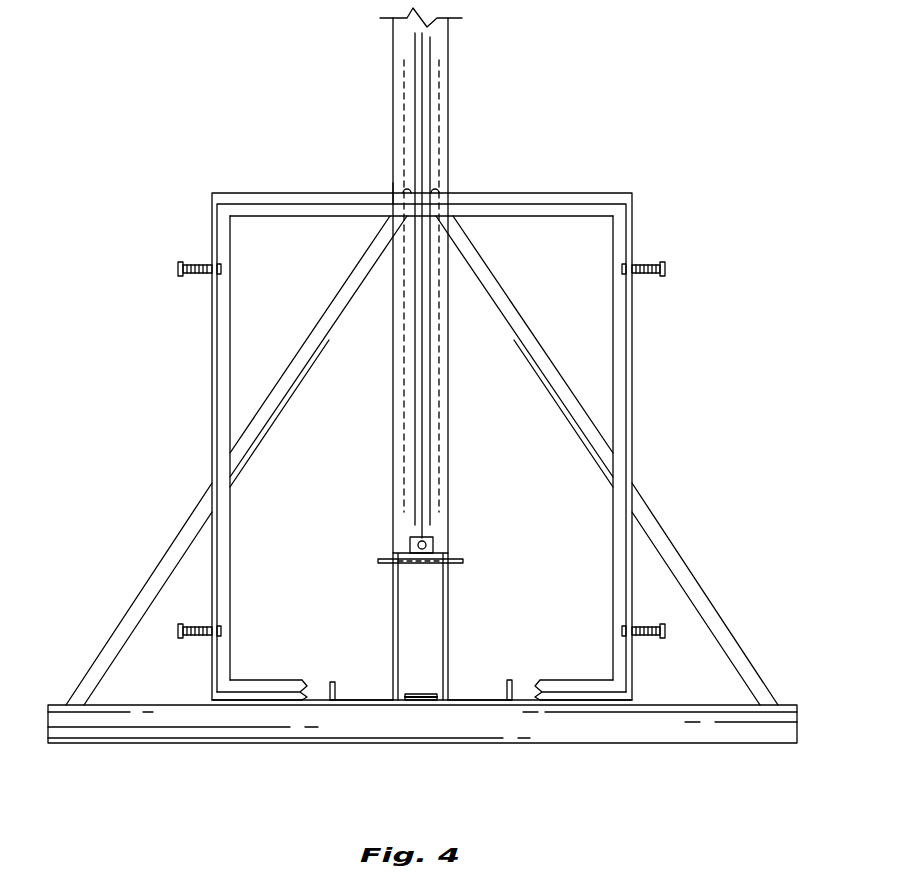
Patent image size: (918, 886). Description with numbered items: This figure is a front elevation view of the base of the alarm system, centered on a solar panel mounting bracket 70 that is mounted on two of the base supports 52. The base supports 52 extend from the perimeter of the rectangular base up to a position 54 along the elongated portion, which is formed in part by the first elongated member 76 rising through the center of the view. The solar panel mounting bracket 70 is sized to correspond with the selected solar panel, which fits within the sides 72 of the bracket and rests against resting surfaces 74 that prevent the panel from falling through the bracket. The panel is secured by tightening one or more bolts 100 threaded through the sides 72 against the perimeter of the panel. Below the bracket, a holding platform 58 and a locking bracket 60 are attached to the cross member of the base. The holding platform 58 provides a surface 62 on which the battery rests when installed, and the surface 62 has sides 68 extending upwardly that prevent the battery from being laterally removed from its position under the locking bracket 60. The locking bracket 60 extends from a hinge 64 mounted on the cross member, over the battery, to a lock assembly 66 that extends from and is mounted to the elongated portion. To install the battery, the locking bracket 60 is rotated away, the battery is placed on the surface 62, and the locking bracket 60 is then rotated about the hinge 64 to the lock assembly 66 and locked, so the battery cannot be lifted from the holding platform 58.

The base supports 52 is at (183, 521).
The position 54 is at (385, 176).
The holding platform 58 is at (487, 698).
The locking bracket 60 is at (434, 628).
The surface 62 is at (361, 682).
The hinge 64 is at (438, 690).
The lock assembly 66 is at (434, 545).
The sides 68 is at (332, 682).
The solar panel mounting bracket 70 is at (210, 163).
The sides 72 is at (530, 193).
The resting surfaces 74 is at (492, 219).
The first elongated member 76 is at (444, 108).
The bolts 100 is at (178, 268).